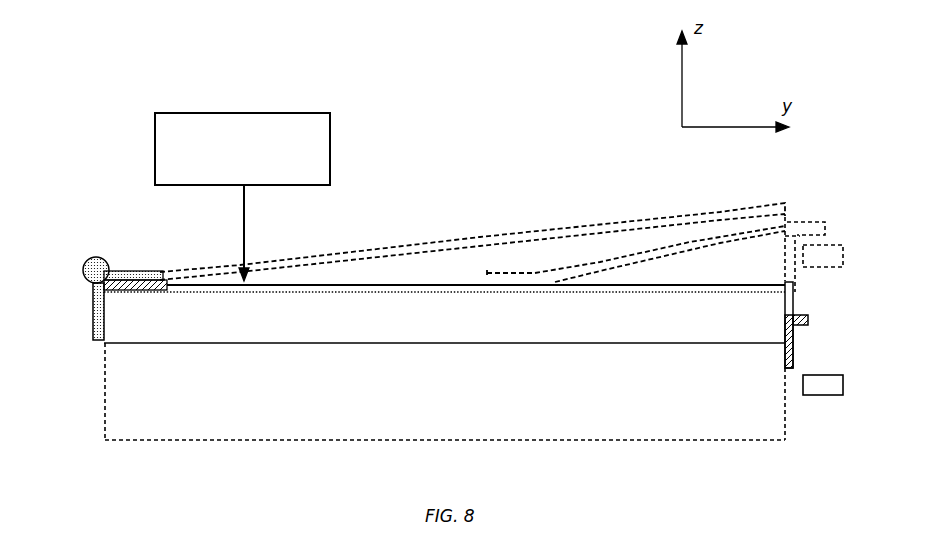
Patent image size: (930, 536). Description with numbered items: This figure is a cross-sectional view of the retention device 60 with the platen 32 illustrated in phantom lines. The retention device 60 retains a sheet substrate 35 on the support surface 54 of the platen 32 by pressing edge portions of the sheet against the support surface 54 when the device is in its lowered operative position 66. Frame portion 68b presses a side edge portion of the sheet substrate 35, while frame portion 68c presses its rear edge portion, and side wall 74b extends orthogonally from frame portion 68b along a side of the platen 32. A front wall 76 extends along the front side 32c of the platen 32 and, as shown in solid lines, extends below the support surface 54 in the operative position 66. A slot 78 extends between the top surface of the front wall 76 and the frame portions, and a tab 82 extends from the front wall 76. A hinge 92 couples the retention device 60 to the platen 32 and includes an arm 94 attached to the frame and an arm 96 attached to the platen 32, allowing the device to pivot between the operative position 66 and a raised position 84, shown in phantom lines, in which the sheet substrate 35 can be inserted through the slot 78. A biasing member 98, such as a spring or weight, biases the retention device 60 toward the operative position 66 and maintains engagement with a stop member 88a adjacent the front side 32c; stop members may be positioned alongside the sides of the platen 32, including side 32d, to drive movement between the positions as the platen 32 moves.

The biasing member 98 is at (168, 122).
The hinge 92 is at (83, 238).
The arm 94 is at (133, 281).
The arm 96 is at (97, 316).
The frame portion 68c is at (134, 288).
The retention device 60 is at (608, 222).
The side wall 74b is at (397, 335).
The frame portion 68b is at (430, 284).
The sheet substrate 35 is at (713, 238).
The support surface 54 is at (343, 276).
The slot 78 is at (795, 222).
The front wall 76 is at (785, 358).
The tab 82 is at (805, 241).
The stop member 88a is at (825, 266).
The raised position 84 is at (790, 157).
The operative position 66 is at (824, 359).
The vacuum platen 32 is at (704, 430).
The front side 32c is at (786, 418).
The side 32d is at (104, 388).